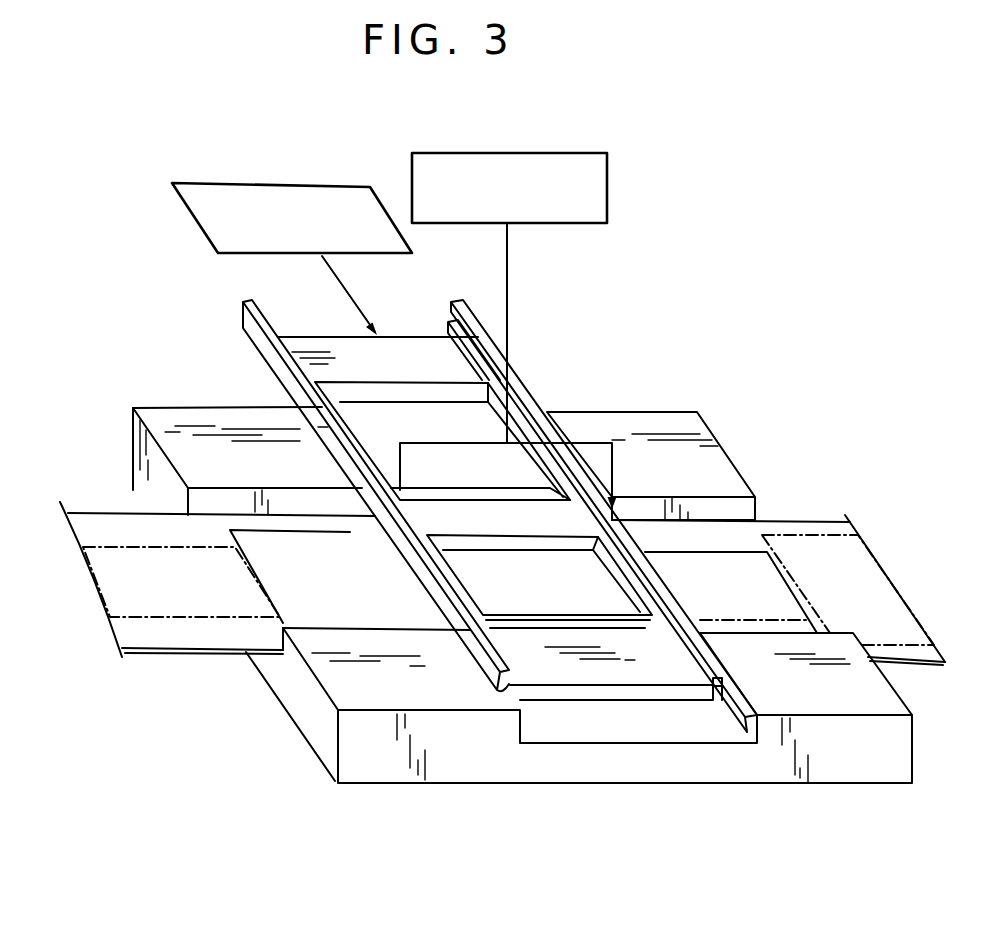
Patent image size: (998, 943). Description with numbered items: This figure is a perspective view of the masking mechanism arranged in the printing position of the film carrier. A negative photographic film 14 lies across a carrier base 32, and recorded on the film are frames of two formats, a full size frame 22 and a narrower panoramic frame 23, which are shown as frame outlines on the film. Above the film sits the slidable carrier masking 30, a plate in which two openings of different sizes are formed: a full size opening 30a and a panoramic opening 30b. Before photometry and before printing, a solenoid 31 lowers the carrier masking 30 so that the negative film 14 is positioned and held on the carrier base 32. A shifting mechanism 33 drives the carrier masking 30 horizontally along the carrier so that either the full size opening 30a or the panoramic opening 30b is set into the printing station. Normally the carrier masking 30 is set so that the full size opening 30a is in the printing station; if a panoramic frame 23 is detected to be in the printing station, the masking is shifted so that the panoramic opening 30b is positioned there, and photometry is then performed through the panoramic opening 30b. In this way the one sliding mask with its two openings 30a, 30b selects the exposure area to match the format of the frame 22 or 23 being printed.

The negative photographic film 14 is at (794, 522).
The full size frame 22 is at (150, 617).
The panoramic frame 23 is at (842, 533).
The carrier masking 30 is at (658, 692).
The full size opening 30a is at (367, 407).
The panoramic opening 30b is at (508, 612).
The solenoid 31 is at (607, 184).
The carrier base 32 is at (488, 765).
The shifting mechanism 33 is at (190, 212).